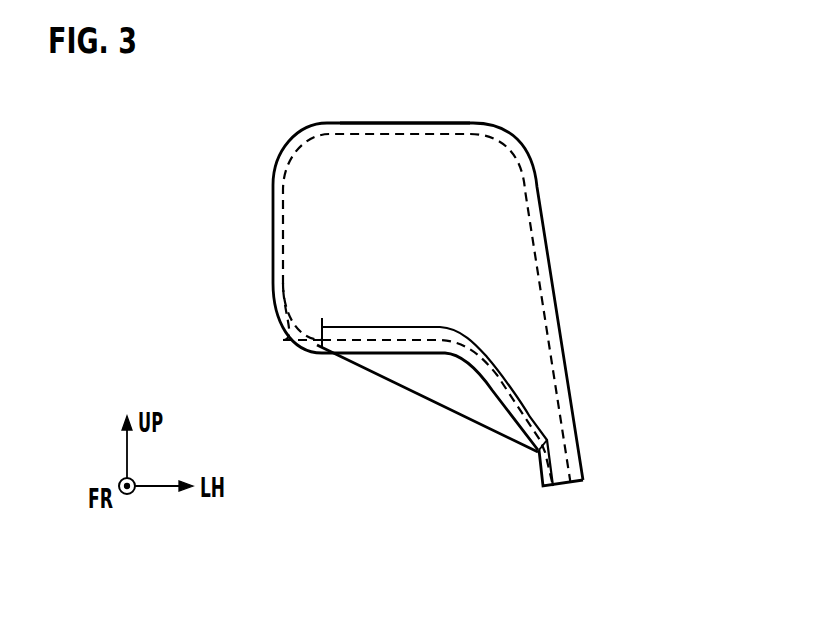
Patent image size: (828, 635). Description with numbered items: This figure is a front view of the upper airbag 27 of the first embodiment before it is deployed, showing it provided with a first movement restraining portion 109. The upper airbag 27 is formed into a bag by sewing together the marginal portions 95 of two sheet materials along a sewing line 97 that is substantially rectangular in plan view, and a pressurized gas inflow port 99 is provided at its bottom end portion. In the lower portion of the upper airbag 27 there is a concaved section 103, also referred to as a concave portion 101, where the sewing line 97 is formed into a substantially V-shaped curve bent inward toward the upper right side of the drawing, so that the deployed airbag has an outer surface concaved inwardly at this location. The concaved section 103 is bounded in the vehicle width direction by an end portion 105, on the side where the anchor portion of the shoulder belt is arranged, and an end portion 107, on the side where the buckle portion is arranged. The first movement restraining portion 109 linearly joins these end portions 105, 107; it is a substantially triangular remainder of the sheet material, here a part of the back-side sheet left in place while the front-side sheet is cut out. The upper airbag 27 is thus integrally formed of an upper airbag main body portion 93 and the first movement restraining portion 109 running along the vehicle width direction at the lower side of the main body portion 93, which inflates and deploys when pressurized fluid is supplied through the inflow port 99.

The upper airbag 27 is at (412, 123).
The upper airbag main body portion 93 is at (556, 300).
The marginal portions 95 is at (272, 228).
The sewing line 97 is at (284, 183).
The pressurized gas inflow port 99 is at (566, 485).
The concave portion 101 is at (437, 413).
The concaved section 103 is at (553, 447).
The end portion 105 is at (318, 348).
The end portion 107 is at (540, 456).
The first movement restraining portion 109 is at (423, 392).